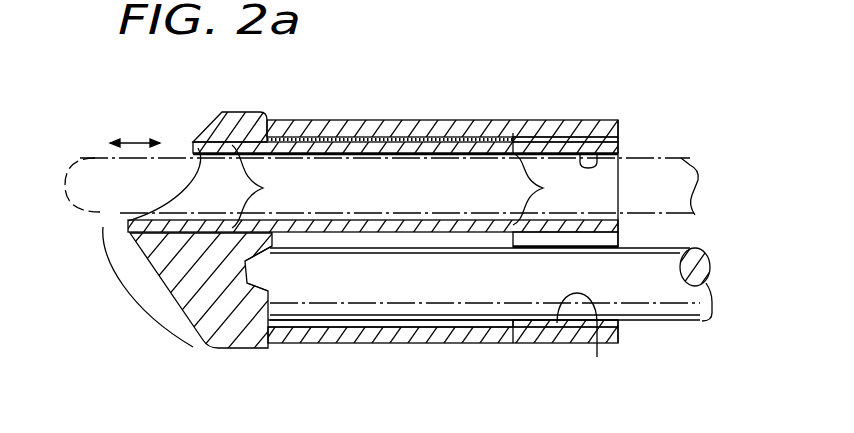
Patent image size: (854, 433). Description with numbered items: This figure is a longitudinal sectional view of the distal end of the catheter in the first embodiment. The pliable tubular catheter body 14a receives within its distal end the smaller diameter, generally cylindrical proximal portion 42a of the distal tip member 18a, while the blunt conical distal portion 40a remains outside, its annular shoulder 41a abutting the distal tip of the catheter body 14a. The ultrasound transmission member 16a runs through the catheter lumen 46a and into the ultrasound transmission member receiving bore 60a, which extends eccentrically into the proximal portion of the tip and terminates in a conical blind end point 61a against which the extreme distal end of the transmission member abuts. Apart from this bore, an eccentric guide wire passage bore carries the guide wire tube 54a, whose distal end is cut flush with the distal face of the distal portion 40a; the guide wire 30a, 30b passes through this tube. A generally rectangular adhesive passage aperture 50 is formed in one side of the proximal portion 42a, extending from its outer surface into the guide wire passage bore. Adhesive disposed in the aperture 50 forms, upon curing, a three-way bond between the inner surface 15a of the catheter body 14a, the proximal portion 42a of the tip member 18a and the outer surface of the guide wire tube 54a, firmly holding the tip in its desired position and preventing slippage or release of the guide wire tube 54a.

The guide wire / rod 30a is at (87, 177).
The guide wire / rod 30b is at (775, 418).
The catheter body 14a is at (415, 128).
The distal tip member 18a is at (242, 112).
The adhesive passage aperture 50 is at (332, 137).
The proximal portion 42a is at (450, 145).
The marker band 46a is at (620, 138).
The inner surface 15a is at (603, 133).
The tube liner 41a is at (297, 343).
The ultrasound transmission member 16a is at (713, 265).
The guide wire tube 54a is at (410, 114).
The distal portion 40a is at (167, 315).
The notch 60a is at (248, 290).
The step edge 61a is at (247, 262).